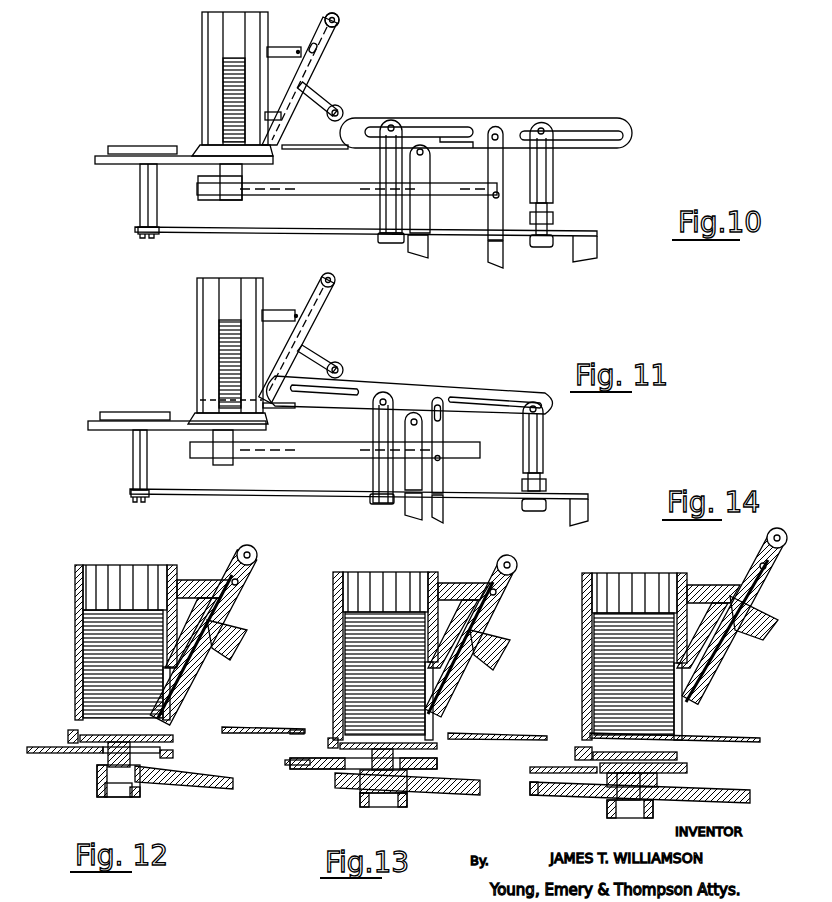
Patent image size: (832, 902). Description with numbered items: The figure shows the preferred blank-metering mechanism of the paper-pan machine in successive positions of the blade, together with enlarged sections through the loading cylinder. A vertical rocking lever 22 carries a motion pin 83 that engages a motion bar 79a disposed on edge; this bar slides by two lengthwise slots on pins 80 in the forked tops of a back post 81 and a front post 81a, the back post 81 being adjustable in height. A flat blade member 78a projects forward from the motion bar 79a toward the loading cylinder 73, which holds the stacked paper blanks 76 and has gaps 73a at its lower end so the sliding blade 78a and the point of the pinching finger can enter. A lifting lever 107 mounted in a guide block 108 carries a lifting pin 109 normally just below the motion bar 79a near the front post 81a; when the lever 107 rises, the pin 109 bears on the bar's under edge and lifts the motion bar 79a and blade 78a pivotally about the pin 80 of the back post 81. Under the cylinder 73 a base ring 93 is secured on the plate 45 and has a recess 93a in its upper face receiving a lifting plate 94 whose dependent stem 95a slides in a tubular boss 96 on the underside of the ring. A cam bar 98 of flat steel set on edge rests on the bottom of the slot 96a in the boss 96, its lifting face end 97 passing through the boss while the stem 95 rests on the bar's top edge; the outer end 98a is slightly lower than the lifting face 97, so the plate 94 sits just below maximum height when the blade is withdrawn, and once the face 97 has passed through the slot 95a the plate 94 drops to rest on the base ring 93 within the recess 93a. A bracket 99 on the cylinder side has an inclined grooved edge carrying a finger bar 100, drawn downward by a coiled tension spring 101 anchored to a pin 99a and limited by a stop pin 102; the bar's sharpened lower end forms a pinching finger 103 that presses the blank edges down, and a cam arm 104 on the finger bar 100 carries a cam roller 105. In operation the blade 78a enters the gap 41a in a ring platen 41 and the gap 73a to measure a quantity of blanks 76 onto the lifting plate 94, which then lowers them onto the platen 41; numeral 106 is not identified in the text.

In FIG. 10, the vertical rocking lever 22 is at (522, 270).
In FIG. 11, the vertical rocking lever 22 is at (441, 515).
In FIG. 12, the ring platen 41 is at (70, 733).
In FIG. 12, the gap in platen 41a is at (170, 738).
In FIG. 14, the gap in platen 41a is at (680, 756).
In FIG. 12, the plate 45 is at (75, 752).
In FIG. 12, the loading cylinder 73 is at (108, 565).
In FIG. 13, the gap in cylinder 73a is at (440, 731).
In FIG. 14, the gap in cylinder 73a is at (684, 722).
In FIG. 12, the paper blanks 76 is at (117, 640).
In FIG. 10, the flat blade member 78a is at (290, 149).
In FIG. 11, the flat blade member 78a is at (268, 409).
In FIG. 12, the flat blade member 78a is at (267, 727).
In FIG. 13, the flat blade member 78a is at (507, 735).
In FIG. 14, the flat blade member 78a is at (748, 738).
In FIG. 10, the motion bar 79a is at (490, 121).
In FIG. 11, the motion bar 79a is at (483, 391).
In FIG. 11, the pin 80 is at (386, 401).
In FIG. 11, the back post 81 is at (590, 440).
In FIG. 10, the front post 81a is at (383, 205).
In FIG. 11, the front post 81a is at (382, 472).
In FIG. 10, the motion pin 83 is at (504, 136).
In FIG. 12, the base ring 93 is at (67, 748).
In FIG. 13, the base ring 93 is at (438, 766).
In FIG. 14, the base ring 93 is at (563, 770).
In FIG. 13, the recess 93a is at (350, 762).
In FIG. 12, the lifting plate 94 is at (174, 754).
In FIG. 13, the lifting plate 94 is at (425, 748).
In FIG. 14, the lifting plate 94 is at (690, 773).
In FIG. 14, the stem 95 is at (660, 784).
In FIG. 12, the dependent stem / slot 95a is at (123, 791).
In FIG. 13, the dependent stem / slot 95a is at (387, 800).
In FIG. 14, the dependent stem / slot 95a is at (607, 808).
In FIG. 12, the tubular boss 96 is at (98, 788).
In FIG. 14, the slot in boss 96a is at (578, 756).
In FIG. 12, the lifting face end 97 is at (137, 742).
In FIG. 10, the cam bar 98 is at (310, 188).
In FIG. 11, the cam bar 98 is at (292, 452).
In FIG. 12, the cam bar 98 is at (210, 786).
In FIG. 13, the cam bar 98 is at (407, 782).
In FIG. 14, the cam bar 98 is at (745, 795).
In FIG. 14, the outer end of cam bar 98a is at (537, 793).
In FIG. 10, the bracket 99 is at (280, 53).
In FIG. 12, the bracket 99 is at (197, 580).
In FIG. 10, the pin 99a is at (300, 52).
In FIG. 10, the finger bar 100 is at (339, 21).
In FIG. 12, the finger bar 100 is at (231, 563).
In FIG. 11, the coiled tension spring 101 is at (307, 316).
In FIG. 11, the stop pin 102 is at (332, 300).
In FIG. 12, the stop pin 102 is at (238, 581).
In FIG. 10, the pinching finger 103 is at (267, 141).
In FIG. 12, the pinching finger 103 is at (163, 713).
In FIG. 14, the pinching finger 103 is at (688, 701).
In FIG. 10, the cam arm 104 is at (325, 84).
In FIG. 12, the cam arm 104 is at (243, 627).
In FIG. 10, the cam roller 105 is at (342, 110).
In FIG. 11, the cam roller 105 is at (341, 365).
In FIG. 10, the member 106 is at (492, 9).
In FIG. 10, the lifting lever 107 is at (423, 245).
In FIG. 11, the lifting lever 107 is at (408, 508).
In FIG. 10, the guide block 108 is at (422, 9).
In FIG. 10, the lifting pin 109 is at (424, 154).
In FIG. 11, the lifting pin 109 is at (417, 424).